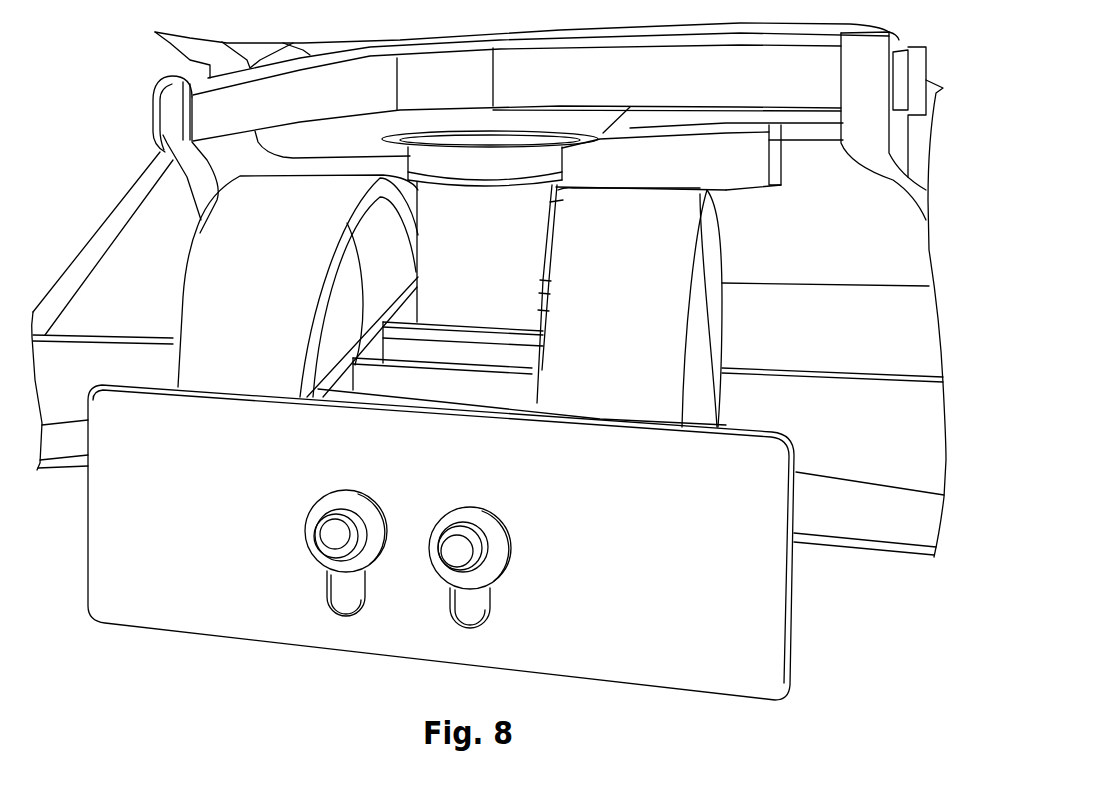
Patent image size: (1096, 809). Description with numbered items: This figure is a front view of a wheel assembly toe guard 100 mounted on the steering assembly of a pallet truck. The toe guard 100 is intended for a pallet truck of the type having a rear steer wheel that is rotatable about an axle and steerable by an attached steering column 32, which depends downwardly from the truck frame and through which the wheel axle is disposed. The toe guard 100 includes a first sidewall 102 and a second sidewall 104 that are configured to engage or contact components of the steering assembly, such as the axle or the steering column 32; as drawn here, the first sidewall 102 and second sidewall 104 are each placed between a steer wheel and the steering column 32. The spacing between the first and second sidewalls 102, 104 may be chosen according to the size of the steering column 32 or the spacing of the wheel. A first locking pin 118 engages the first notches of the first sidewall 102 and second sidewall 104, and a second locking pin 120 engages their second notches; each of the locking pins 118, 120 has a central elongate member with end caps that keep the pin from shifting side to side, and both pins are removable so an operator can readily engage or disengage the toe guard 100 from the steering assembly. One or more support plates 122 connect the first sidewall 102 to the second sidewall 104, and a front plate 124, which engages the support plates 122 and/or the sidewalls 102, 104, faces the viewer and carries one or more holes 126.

The wheel assembly toe guard 100 is at (240, 162).
The steering column 32 is at (510, 245).
The first sidewall 102 is at (300, 390).
The second sidewall 104 is at (530, 397).
The first locking pin 118 is at (488, 340).
The second locking pin 120 is at (547, 305).
The support plate 122 is at (380, 377).
The front plate 124 is at (103, 523).
The holes 126 is at (340, 597).